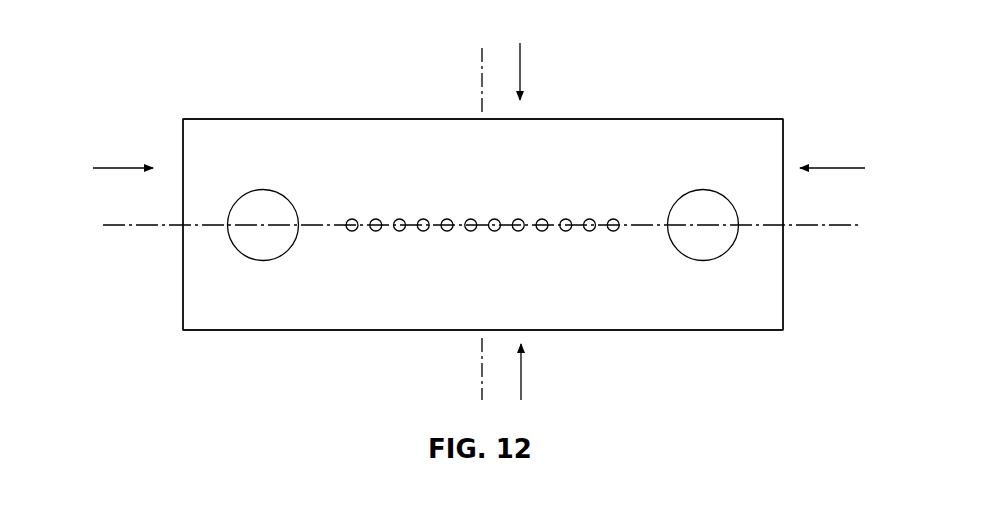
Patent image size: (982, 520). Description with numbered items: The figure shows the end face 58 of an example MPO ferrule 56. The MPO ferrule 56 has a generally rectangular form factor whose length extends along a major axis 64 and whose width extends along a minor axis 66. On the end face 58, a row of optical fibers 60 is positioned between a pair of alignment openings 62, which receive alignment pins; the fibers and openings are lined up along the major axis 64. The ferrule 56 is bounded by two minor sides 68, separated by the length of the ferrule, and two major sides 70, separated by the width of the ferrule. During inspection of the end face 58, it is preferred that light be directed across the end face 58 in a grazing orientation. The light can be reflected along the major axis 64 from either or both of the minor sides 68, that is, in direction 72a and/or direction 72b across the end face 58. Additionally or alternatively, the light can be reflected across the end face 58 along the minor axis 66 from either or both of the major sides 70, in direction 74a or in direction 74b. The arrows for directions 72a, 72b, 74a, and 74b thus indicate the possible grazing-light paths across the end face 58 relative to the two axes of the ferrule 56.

The MPO ferrule 56 is at (745, 106).
The end face 58 is at (760, 145).
The row of optical fibers 60 is at (423, 232).
The alignment openings 62 is at (263, 189).
The major axis 64 is at (130, 228).
The minor axis 66 is at (481, 63).
The minor sides 68 is at (182, 305).
The major sides 70 is at (335, 118).
The direction 72a is at (840, 169).
The direction 72b is at (118, 169).
The direction 74a is at (522, 378).
The direction 74b is at (521, 68).